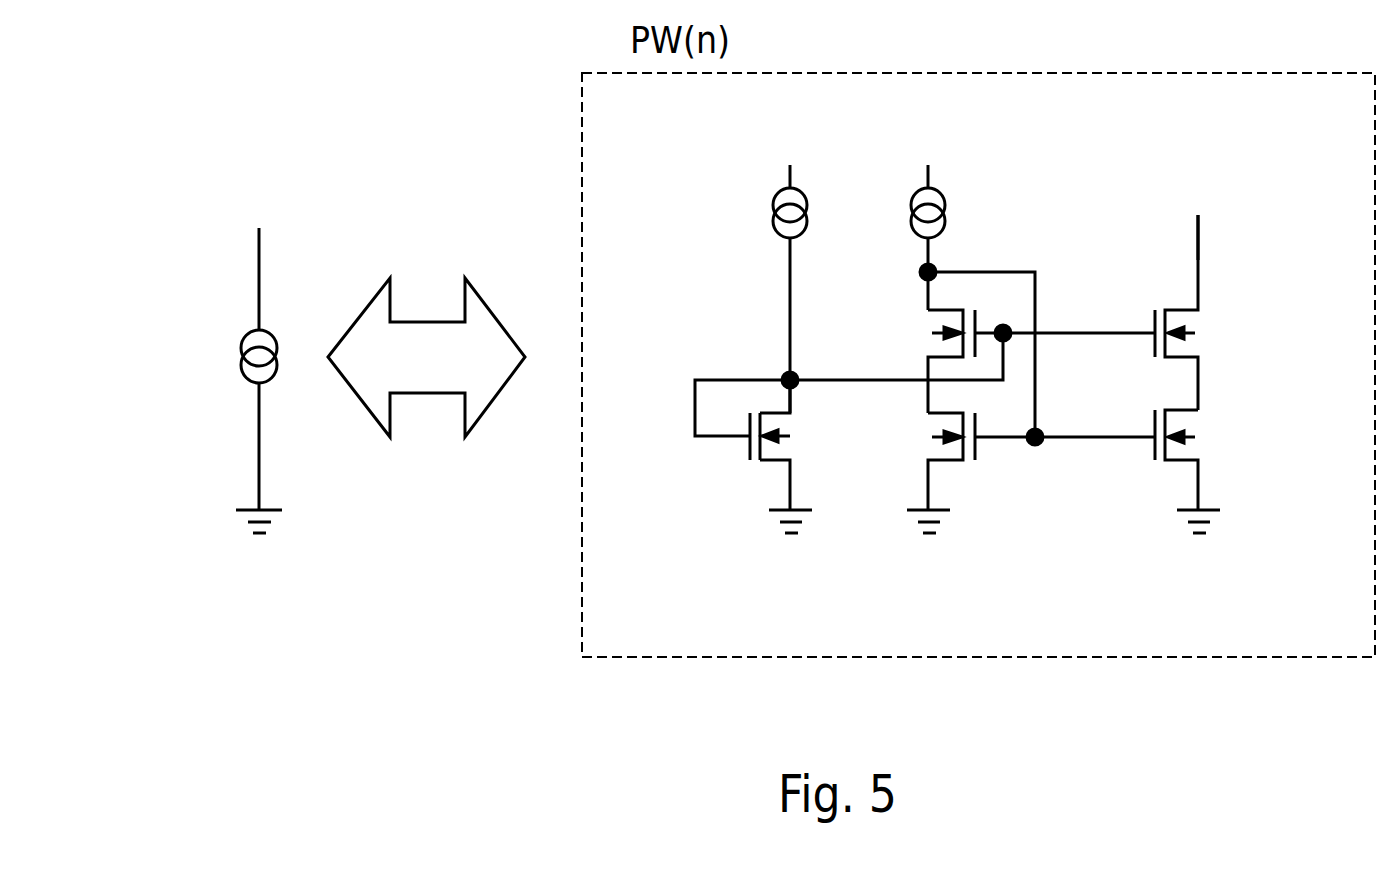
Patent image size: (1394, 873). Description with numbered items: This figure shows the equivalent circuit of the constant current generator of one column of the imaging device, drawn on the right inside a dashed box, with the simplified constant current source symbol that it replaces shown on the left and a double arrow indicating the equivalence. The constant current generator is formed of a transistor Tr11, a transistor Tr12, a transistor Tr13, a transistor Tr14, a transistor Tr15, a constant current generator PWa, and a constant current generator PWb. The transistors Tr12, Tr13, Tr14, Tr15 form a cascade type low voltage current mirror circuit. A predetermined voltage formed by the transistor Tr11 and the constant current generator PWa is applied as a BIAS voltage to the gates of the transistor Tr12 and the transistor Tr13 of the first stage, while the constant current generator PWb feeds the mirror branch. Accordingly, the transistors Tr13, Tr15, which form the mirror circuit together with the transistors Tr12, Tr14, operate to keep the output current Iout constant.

The output current Iout is at (1206, 213).
The constant current generator PWa is at (757, 289).
The constant current generator PWb is at (958, 237).
The transistor Tr11 is at (745, 456).
The transistor Tr12 is at (913, 361).
The transistor Tr13 is at (1219, 312).
The transistor Tr14 is at (913, 472).
The transistor Tr15 is at (1219, 471).